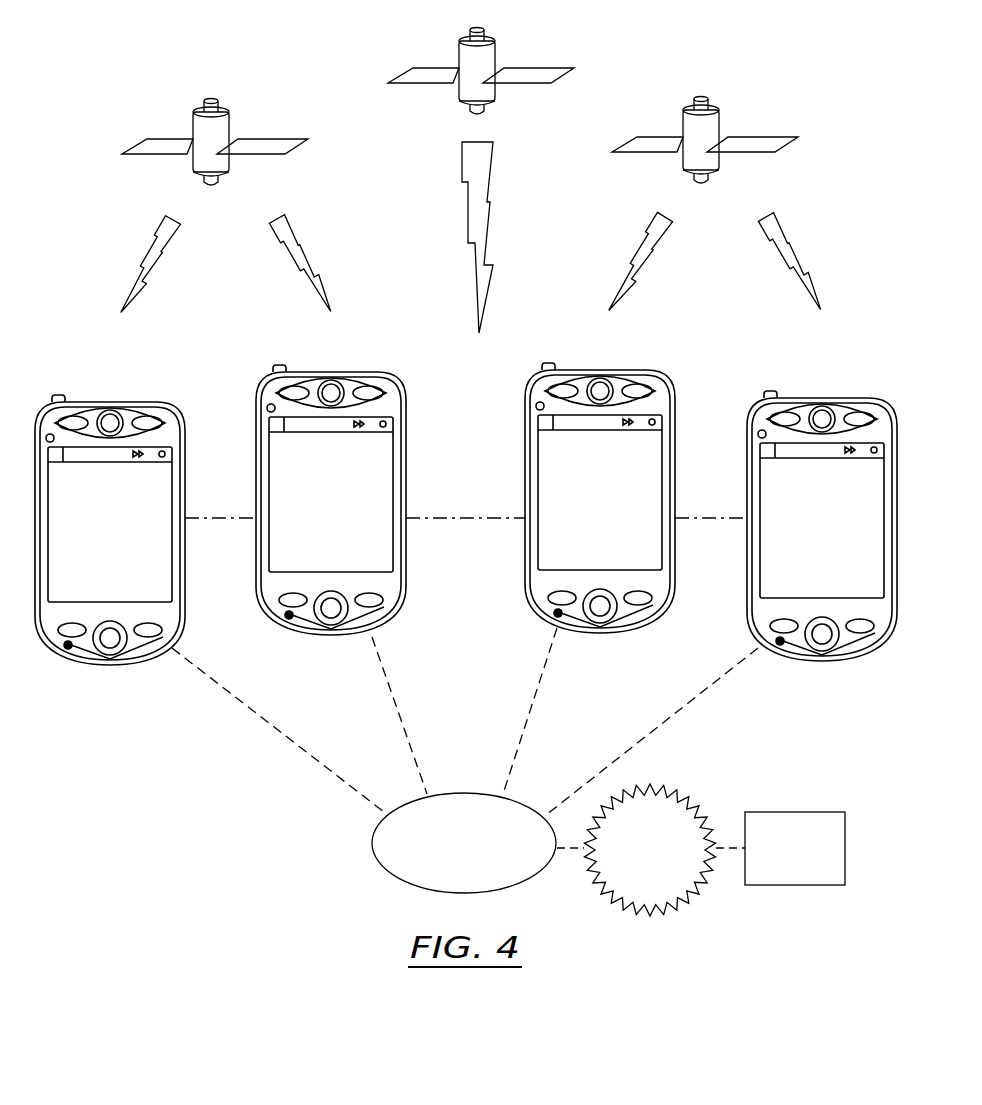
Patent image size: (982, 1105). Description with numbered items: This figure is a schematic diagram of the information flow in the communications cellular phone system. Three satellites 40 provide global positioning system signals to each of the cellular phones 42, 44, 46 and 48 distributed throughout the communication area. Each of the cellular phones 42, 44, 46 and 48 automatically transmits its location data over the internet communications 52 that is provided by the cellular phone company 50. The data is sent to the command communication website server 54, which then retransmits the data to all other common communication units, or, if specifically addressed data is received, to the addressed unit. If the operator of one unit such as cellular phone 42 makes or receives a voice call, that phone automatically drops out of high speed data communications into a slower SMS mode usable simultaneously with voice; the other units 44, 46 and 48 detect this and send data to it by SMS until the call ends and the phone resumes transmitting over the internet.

The satellites 40 is at (432, 63).
The cellular phone 42 is at (82, 402).
The cellular phone 44 is at (303, 372).
The cellular phone 46 is at (577, 368).
The cellular phone 48 is at (793, 396).
The cellular phone company 50 is at (523, 883).
The internet communications 52 is at (690, 800).
The command communication website server 54 is at (820, 812).